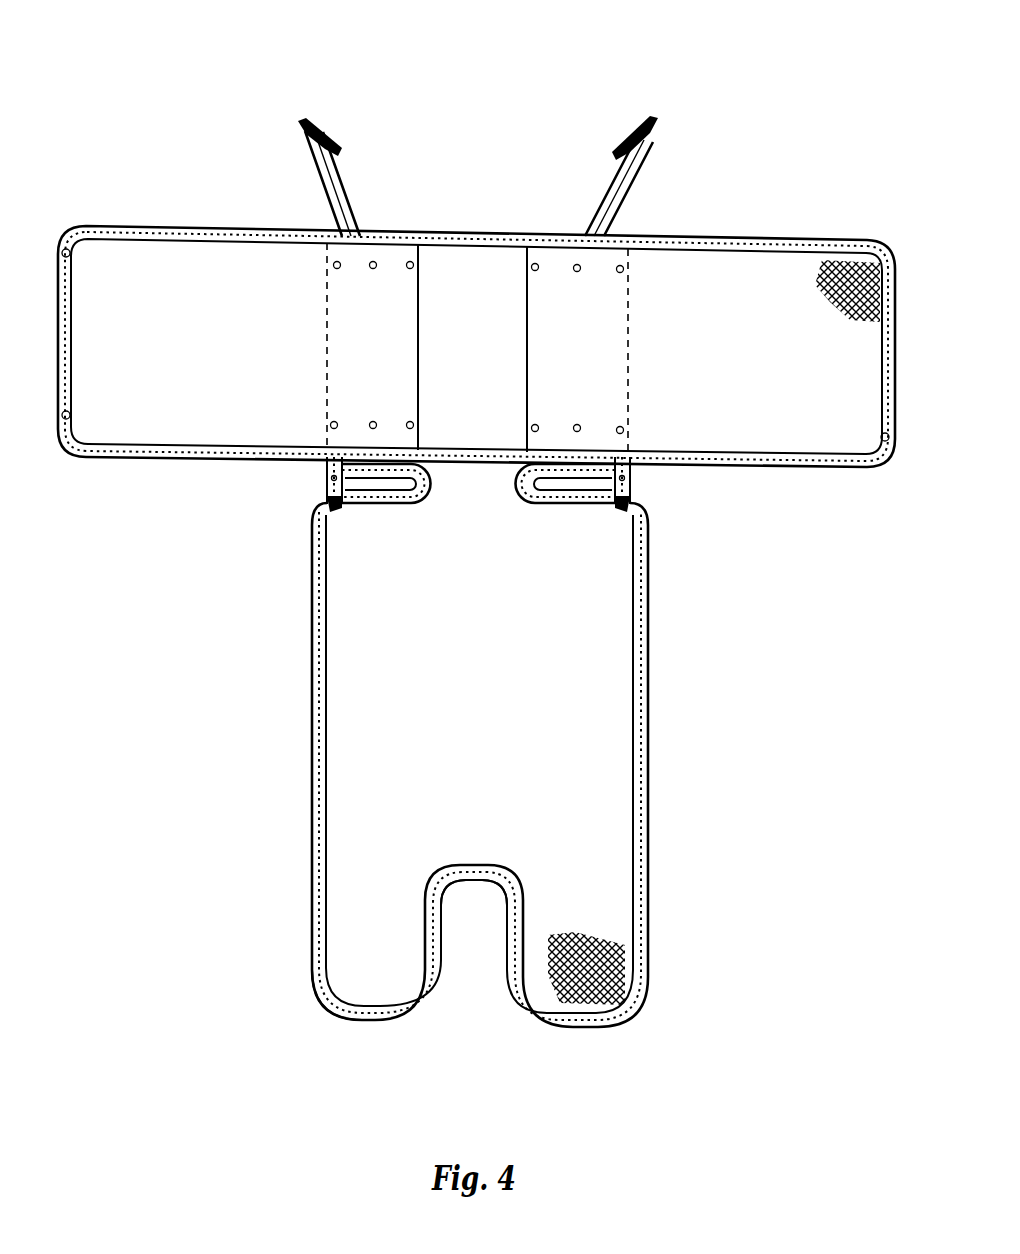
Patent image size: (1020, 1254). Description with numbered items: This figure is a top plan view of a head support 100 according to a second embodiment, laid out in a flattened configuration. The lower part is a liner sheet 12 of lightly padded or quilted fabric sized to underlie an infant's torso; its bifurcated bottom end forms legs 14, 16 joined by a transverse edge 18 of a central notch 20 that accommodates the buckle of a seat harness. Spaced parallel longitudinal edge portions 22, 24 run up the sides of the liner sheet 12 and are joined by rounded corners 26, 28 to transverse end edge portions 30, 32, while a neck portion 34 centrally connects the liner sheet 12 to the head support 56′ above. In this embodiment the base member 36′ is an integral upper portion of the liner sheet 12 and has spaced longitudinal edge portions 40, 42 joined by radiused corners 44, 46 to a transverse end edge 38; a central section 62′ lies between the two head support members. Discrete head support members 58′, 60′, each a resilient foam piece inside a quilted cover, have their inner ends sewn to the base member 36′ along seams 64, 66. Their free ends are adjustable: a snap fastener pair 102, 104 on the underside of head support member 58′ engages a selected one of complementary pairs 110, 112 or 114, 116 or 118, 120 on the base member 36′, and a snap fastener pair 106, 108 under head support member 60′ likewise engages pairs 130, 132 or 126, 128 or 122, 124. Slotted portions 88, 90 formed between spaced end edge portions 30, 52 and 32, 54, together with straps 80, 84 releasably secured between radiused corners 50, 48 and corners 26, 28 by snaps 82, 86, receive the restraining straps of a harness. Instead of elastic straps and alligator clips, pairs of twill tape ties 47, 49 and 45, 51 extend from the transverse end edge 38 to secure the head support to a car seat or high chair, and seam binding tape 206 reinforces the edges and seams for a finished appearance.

The liner sheet 12 is at (464, 704).
The leg 14 is at (340, 952).
The leg 16 is at (603, 932).
The transverse edge 18 is at (470, 866).
The central recess or notch 20 is at (470, 915).
The longitudinal edge portion 22 is at (312, 755).
The longitudinal edge portion 24 is at (650, 742).
The rounded corner 26 is at (318, 512).
The rounded corner 28 is at (646, 512).
The transverse end edge portion 30 is at (390, 496).
The transverse end edge portion 32 is at (553, 498).
The neck portion 34 is at (472, 446).
The base member 36′ is at (490, 359).
The transverse end edge 38 is at (472, 238).
The longitudinal edge portion 40 is at (629, 352).
The longitudinal edge portion 42 is at (326, 346).
The radiused corner 44 is at (636, 262).
The twill tape tie 45 is at (612, 195).
The radiused corner 46 is at (332, 256).
The twill tape tie 47 is at (350, 232).
The radiused corner 48 is at (630, 468).
The twill tape tie 49 is at (300, 122).
The radiused corner 50 is at (327, 452).
The twill tape tie 51 is at (652, 120).
The end edge portion 52 is at (434, 476).
The end edge portion 54 is at (515, 476).
The head support 56′ is at (148, 196).
The head support member 58′ is at (205, 352).
The head support member 60′ is at (780, 366).
The center top section 62′ is at (493, 296).
The seam 64 is at (416, 372).
The seam 66 is at (529, 372).
The strap 80 is at (327, 480).
The snap 82 is at (322, 515).
The strap 84 is at (631, 488).
The snap 86 is at (640, 520).
The slotted portion 88 is at (363, 484).
The slotted portion 90 is at (598, 486).
The head support 100 is at (178, 631).
The snap fastener 102 is at (74, 258).
The snap fastener 104 is at (72, 416).
The snap fastener 106 is at (874, 258).
The snap fastener 108 is at (880, 438).
The snap fastener 110 is at (337, 261).
The snap fastener 112 is at (330, 424).
The snap fastener 114 is at (373, 261).
The snap fastener 116 is at (370, 422).
The snap fastener 118 is at (411, 261).
The snap fastener 120 is at (413, 422).
The snap fastener 122 is at (534, 263).
The snap fastener 124 is at (533, 425).
The snap fastener 126 is at (577, 264).
The snap fastener 128 is at (578, 424).
The snap fastener 130 is at (621, 265).
The snap fastener 132 is at (622, 427).
The seam binding tape 206 is at (648, 690).